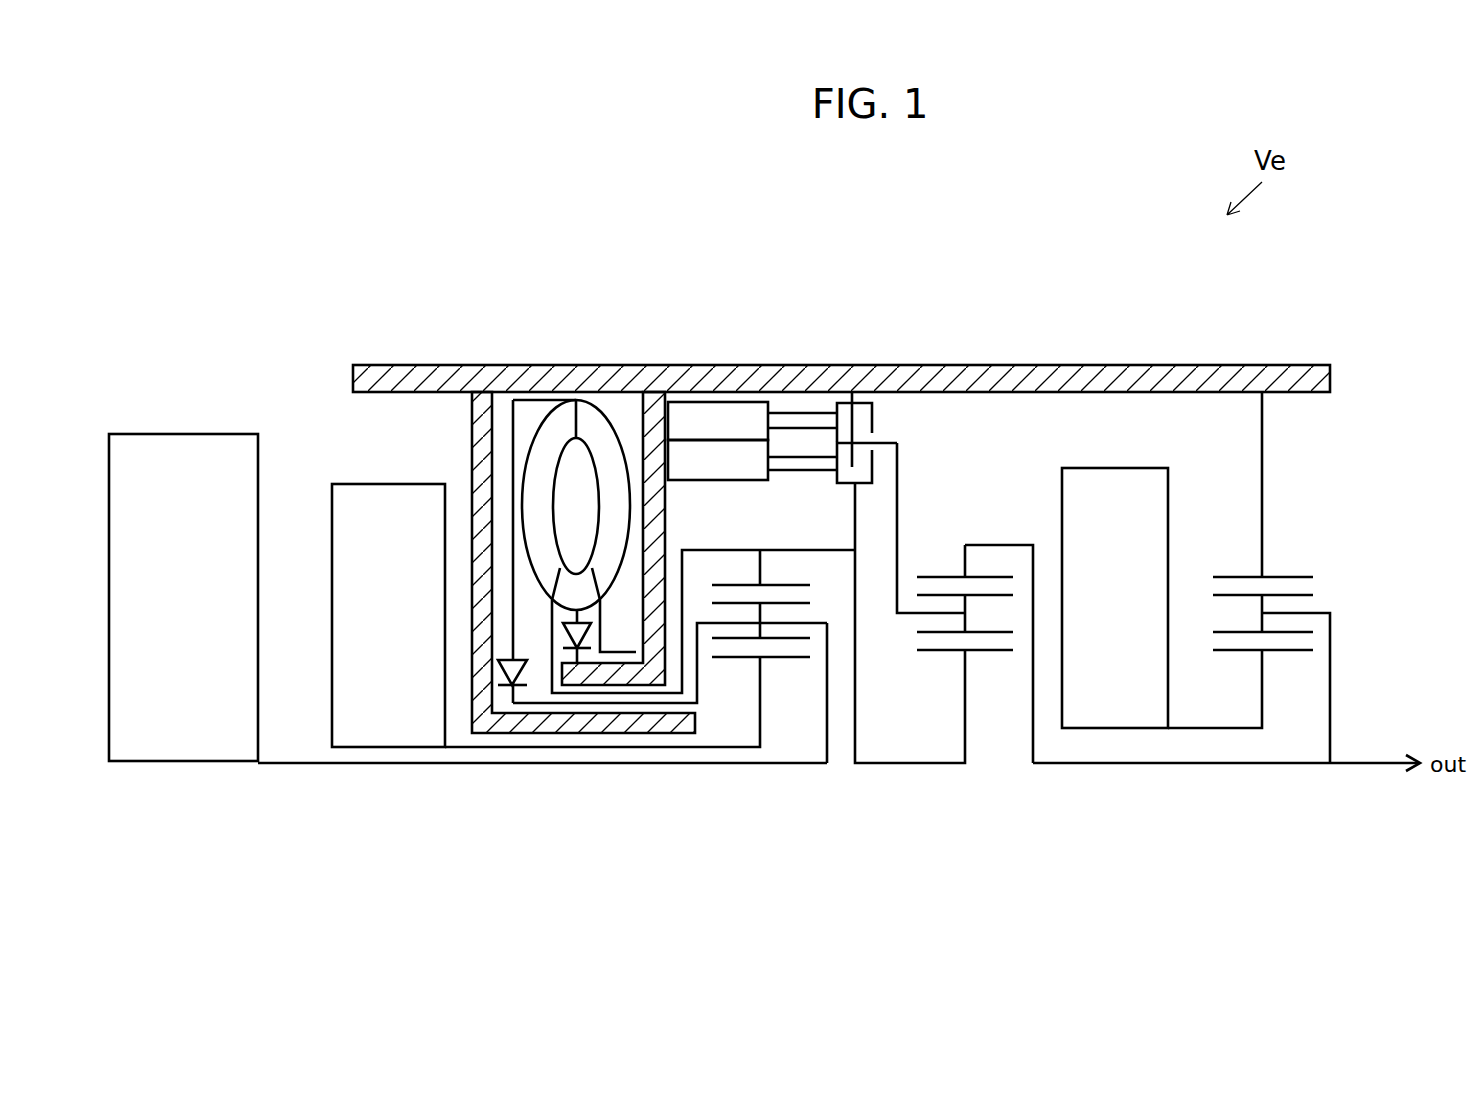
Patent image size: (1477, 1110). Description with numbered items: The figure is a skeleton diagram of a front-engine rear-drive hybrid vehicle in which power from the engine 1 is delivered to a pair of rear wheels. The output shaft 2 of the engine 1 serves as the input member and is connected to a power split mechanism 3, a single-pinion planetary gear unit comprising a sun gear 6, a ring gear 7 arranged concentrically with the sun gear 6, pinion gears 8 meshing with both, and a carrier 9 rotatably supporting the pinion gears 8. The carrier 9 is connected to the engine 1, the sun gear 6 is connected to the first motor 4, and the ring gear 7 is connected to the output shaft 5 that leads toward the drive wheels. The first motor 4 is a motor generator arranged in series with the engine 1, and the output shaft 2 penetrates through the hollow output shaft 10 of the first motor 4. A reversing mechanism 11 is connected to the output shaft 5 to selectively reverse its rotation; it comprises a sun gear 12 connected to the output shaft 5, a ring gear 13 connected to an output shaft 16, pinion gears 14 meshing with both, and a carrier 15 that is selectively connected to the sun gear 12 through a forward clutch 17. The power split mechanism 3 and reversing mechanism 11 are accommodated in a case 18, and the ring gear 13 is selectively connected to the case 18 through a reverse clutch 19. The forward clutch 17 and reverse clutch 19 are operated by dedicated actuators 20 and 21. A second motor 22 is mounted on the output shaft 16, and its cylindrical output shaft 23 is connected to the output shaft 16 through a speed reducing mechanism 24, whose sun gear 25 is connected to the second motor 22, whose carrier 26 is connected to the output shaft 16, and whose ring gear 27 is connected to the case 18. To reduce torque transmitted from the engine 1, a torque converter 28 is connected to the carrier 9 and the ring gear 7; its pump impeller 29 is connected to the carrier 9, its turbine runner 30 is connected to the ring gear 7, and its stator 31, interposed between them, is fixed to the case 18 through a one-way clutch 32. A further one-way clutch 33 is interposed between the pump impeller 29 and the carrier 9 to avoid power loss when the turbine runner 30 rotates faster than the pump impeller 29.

The engine 1 is at (193, 447).
The output shaft of the engine 2 is at (316, 763).
The power split mechanism 3 is at (793, 778).
The first motor 4 is at (389, 498).
The output shaft 5 is at (902, 765).
The sun gear 6 is at (786, 660).
The ring gear 7 is at (790, 585).
The pinion gears 8 is at (708, 638).
The carrier 9 is at (828, 655).
The hollow output shaft of the first motor 10 is at (552, 752).
The reversing mechanism 11 is at (999, 686).
The sun gear 12 is at (937, 653).
The ring gear 13 is at (940, 575).
The pinion gears 14 is at (915, 633).
The carrier 15 is at (897, 600).
The output shaft of the reversing mechanism 16 is at (1099, 765).
The forward clutch 17 is at (827, 500).
The case 18 is at (937, 375).
The reverse clutch 19 is at (887, 424).
The actuator 20 is at (710, 478).
The actuator 21 is at (725, 405).
The second motor 22 is at (1125, 468).
The cylindrical output shaft of the second motor 23 is at (1211, 735).
The speed reducing mechanism 24 is at (1304, 592).
The sun gear 25 is at (1228, 655).
The carrier 26 is at (1330, 633).
The ring gear 27 is at (1293, 575).
The torque converter 28 is at (608, 395).
The pump impeller 29 is at (612, 440).
The turbine runner 30 is at (558, 425).
The stator 31 is at (585, 600).
The one-way clutch 32 is at (602, 640).
The one-way clutch 33 is at (529, 666).